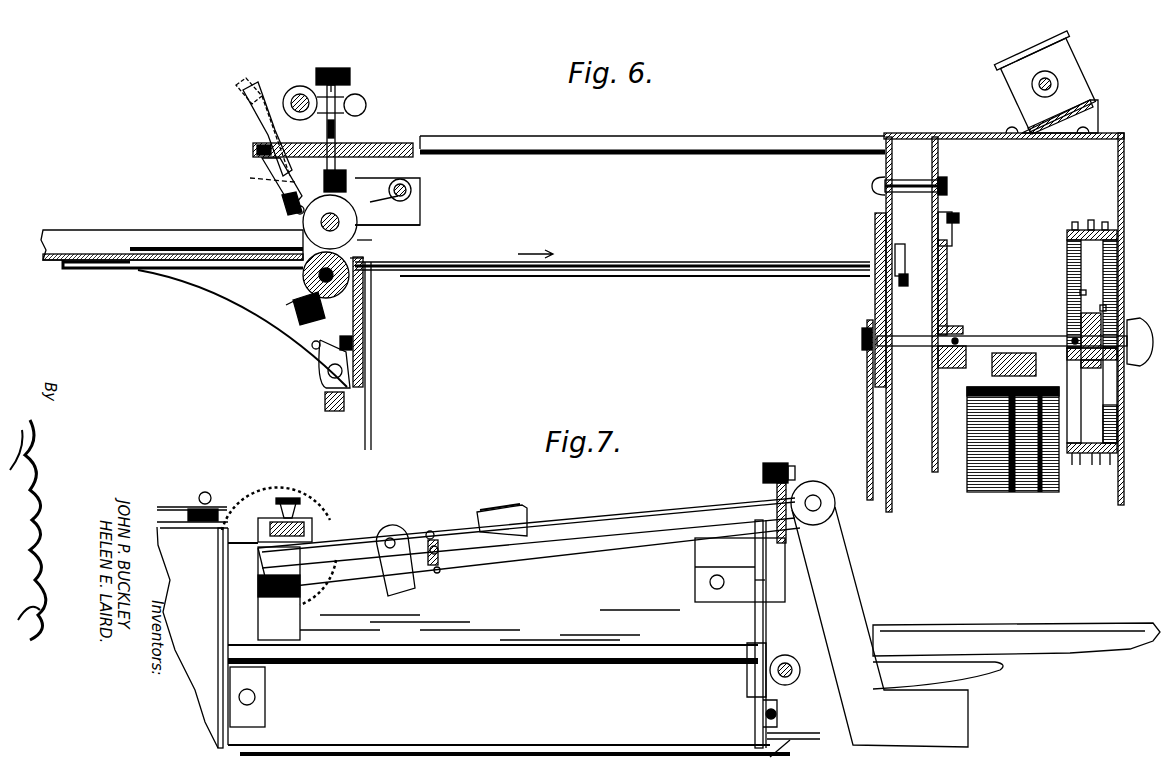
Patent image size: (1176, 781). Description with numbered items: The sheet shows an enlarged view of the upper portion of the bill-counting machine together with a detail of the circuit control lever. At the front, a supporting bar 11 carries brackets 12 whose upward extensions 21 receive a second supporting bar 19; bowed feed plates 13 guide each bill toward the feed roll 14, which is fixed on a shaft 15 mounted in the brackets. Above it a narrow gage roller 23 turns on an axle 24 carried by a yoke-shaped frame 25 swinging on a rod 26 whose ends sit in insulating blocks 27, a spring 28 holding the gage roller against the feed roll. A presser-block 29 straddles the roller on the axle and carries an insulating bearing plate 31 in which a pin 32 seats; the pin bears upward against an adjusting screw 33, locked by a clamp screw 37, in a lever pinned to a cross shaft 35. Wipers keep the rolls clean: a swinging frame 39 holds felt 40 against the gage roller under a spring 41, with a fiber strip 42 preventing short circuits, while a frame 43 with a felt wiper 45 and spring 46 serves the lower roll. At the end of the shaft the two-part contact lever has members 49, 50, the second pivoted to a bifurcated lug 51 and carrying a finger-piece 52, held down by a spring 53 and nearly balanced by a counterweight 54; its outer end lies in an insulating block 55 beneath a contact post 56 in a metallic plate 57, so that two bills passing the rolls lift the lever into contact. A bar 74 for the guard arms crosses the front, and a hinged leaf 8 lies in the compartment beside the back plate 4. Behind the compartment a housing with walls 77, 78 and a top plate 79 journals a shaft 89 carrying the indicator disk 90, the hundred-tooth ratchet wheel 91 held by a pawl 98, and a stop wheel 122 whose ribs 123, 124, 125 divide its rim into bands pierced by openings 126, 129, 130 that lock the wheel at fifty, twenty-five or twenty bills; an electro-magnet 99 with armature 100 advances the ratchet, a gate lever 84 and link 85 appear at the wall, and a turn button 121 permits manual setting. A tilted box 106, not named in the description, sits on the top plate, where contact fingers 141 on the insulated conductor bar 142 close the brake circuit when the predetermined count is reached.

In FIG. 6, the back plate 4 is at (889, 404).
In FIG. 6, the hinged leaf 8 is at (700, 272).
In FIG. 6, the supporting bar 11 is at (363, 318).
In FIG. 7, the supporting bar 11 is at (758, 721).
In FIG. 6, the bracket 12 is at (267, 302).
In FIG. 7, the bracket 12 is at (975, 675).
In FIG. 6, the feed plate 13 is at (88, 255).
In FIG. 7, the feed plate 13 is at (914, 630).
In FIG. 6, the feed roll 14 is at (303, 276).
In FIG. 6, the shaft 15 is at (356, 279).
In FIG. 7, the shaft 15 is at (771, 672).
In FIG. 6, the second supporting bar 19 is at (405, 145).
In FIG. 7, the second supporting bar 19 is at (713, 540).
In FIG. 7, the upward extension 21 is at (773, 634).
In FIG. 6, the gage roller 23 is at (315, 226).
In FIG. 6, the axle 24 is at (379, 242).
In FIG. 6, the yoke-shaped frame 25 is at (400, 224).
In FIG. 6, the rod 26 is at (421, 204).
In FIG. 7, the rod 26 is at (716, 590).
In FIG. 7, the insulating block 27 is at (708, 583).
In FIG. 6, the spring 28 is at (412, 188).
In FIG. 6, the presser-block 29 is at (330, 219).
In FIG. 6, the insulating bearing plate 31 is at (342, 176).
In FIG. 6, the pin 32 is at (337, 135).
In FIG. 7, the pin 32 is at (790, 530).
In FIG. 6, the adjusting screw 33 is at (336, 68).
In FIG. 7, the adjusting screw 33 is at (763, 472).
In FIG. 6, the shaft 35 is at (300, 94).
In FIG. 7, the shaft 35 is at (822, 506).
In FIG. 6, the clamp screw 37 is at (366, 104).
In FIG. 6, the swinging frame 39 is at (270, 167).
In FIG. 6, the felt 40 is at (280, 198).
In FIG. 6, the spring 41 is at (265, 136).
In FIG. 6, the fiber strip 42 is at (270, 180).
In FIG. 6, the swinging frame 43 is at (325, 356).
In FIG. 6, the felt wiper 45 is at (300, 322).
In FIG. 6, the spring 46 is at (353, 343).
In FIG. 7, the lever member 49 is at (529, 558).
In FIG. 7, the lever member 50 is at (360, 540).
In FIG. 7, the bifurcated lug 51 is at (385, 572).
In FIG. 7, the finger-piece 52 is at (505, 507).
In FIG. 7, the spring 53 is at (446, 558).
In FIG. 7, the counterweight 54 is at (880, 627).
In FIG. 7, the insulating block 55 is at (262, 585).
In FIG. 7, the contact post 56 is at (276, 546).
In FIG. 7, the metallic plate 57 is at (302, 525).
In FIG. 6, the bar 74 is at (333, 413).
In FIG. 6, the wall 77 is at (893, 157).
In FIG. 6, the wall 78 is at (1118, 162).
In FIG. 6, the top plate 79 is at (966, 134).
In FIG. 6, the lever 84 is at (903, 248).
In FIG. 6, the link 85 is at (910, 292).
In FIG. 6, the shaft 89 is at (1026, 343).
In FIG. 6, the disk 90 is at (868, 306).
In FIG. 6, the ratchet wheel 91 is at (948, 270).
In FIG. 6, the pawl 98 is at (953, 240).
In FIG. 6, the electro-magnet 99 is at (1013, 439).
In FIG. 6, the armature 100 is at (1000, 360).
In FIG. 6, the switch box 106 is at (1006, 68).
In FIG. 6, the turn button 121 is at (1140, 364).
In FIG. 6, the stop wheel 122 is at (1067, 272).
In FIG. 6, the circumferential rib 123 is at (1070, 230).
In FIG. 6, the circumferential rib 124 is at (1090, 222).
In FIG. 6, the circumferential rib 125 is at (1110, 232).
In FIG. 6, the opening 126 is at (1078, 293).
In FIG. 6, the openings 129 is at (1085, 315).
In FIG. 6, the openings 130 is at (1117, 302).
In FIG. 7, the contact finger 141 is at (184, 518).
In FIG. 7, the conductor bar 142 is at (226, 502).